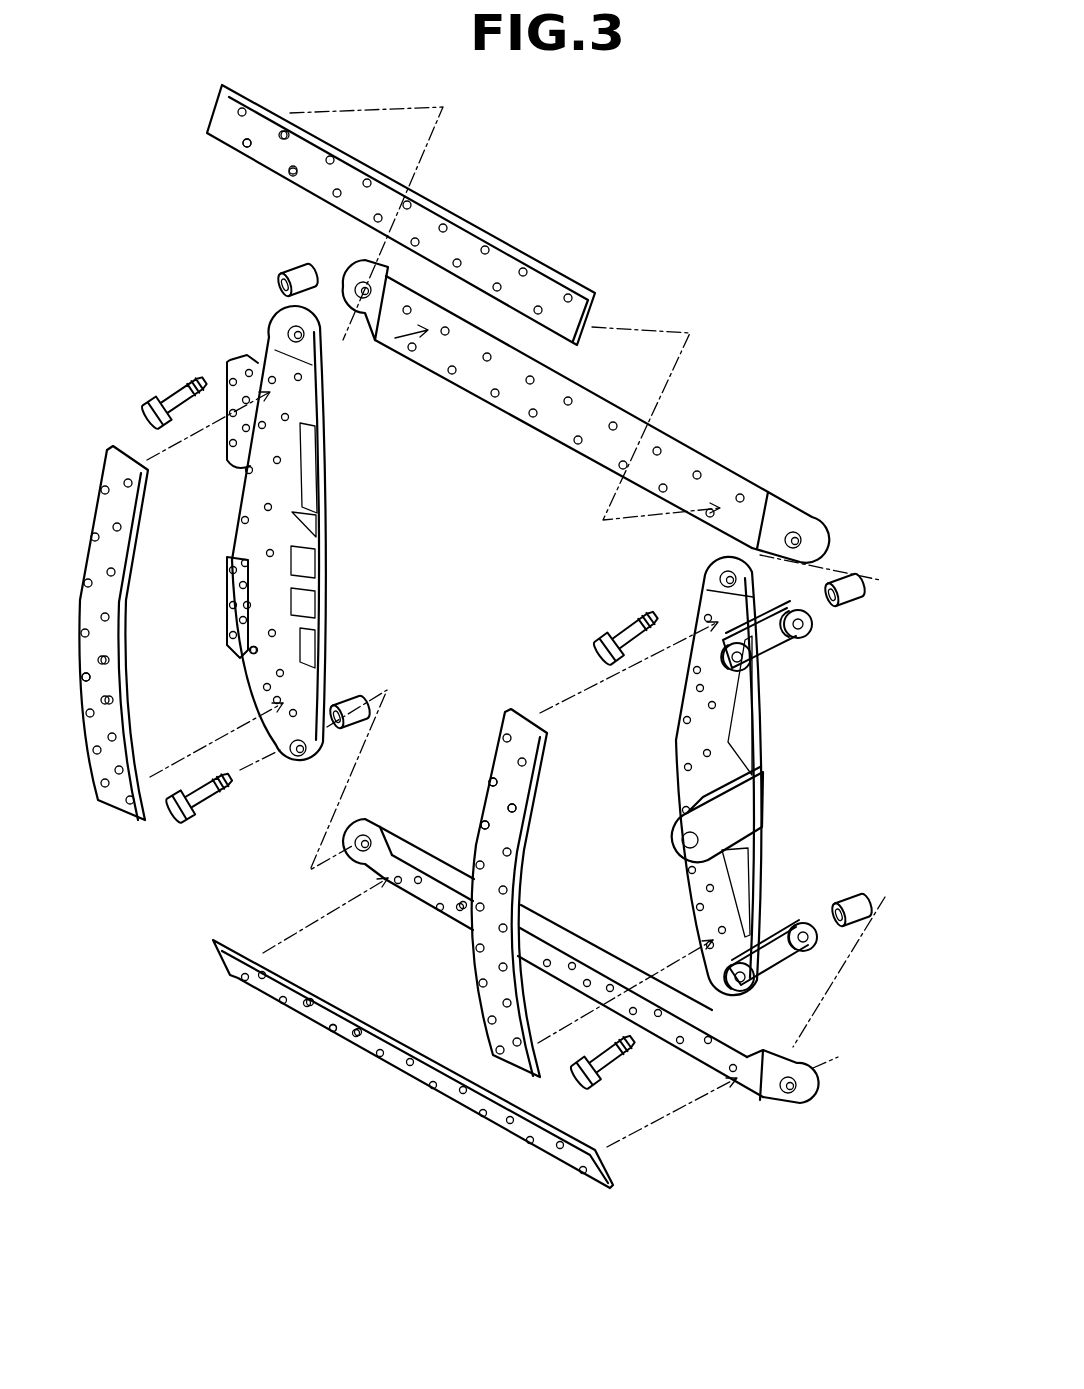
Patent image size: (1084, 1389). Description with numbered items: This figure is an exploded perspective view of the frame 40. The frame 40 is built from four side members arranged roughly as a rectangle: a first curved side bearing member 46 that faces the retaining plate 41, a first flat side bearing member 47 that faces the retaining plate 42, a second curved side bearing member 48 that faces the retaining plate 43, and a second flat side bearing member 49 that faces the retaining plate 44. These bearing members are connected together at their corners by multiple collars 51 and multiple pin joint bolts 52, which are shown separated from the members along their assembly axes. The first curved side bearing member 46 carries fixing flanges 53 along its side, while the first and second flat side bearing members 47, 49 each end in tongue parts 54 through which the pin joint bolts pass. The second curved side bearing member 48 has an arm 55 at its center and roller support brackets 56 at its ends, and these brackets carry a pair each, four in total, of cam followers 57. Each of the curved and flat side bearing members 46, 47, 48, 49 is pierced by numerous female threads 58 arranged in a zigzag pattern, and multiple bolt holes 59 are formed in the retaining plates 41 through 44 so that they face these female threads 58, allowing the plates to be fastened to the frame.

The frame 40 is at (690, 210).
The retaining plate 41 is at (113, 800).
The retaining plate 42 is at (472, 245).
The retaining plate 43 is at (485, 960).
The retaining plate 44 is at (395, 1065).
The first curved side bearing member 46 is at (290, 572).
The first flat side bearing member 47 is at (563, 425).
The second curved side bearing member 48 is at (683, 790).
The second flat side bearing member 49 is at (560, 940).
The collar 51 is at (286, 274).
The pin joint bolt 52 is at (170, 395).
The fixing flange 53 is at (226, 462).
The tongue part 54 is at (355, 280).
The arm 55 is at (722, 815).
The roller support bracket 56 is at (760, 658).
The cam follower 57 is at (808, 637).
The female thread 58 is at (533, 413).
The bolt hole 59 is at (293, 172).